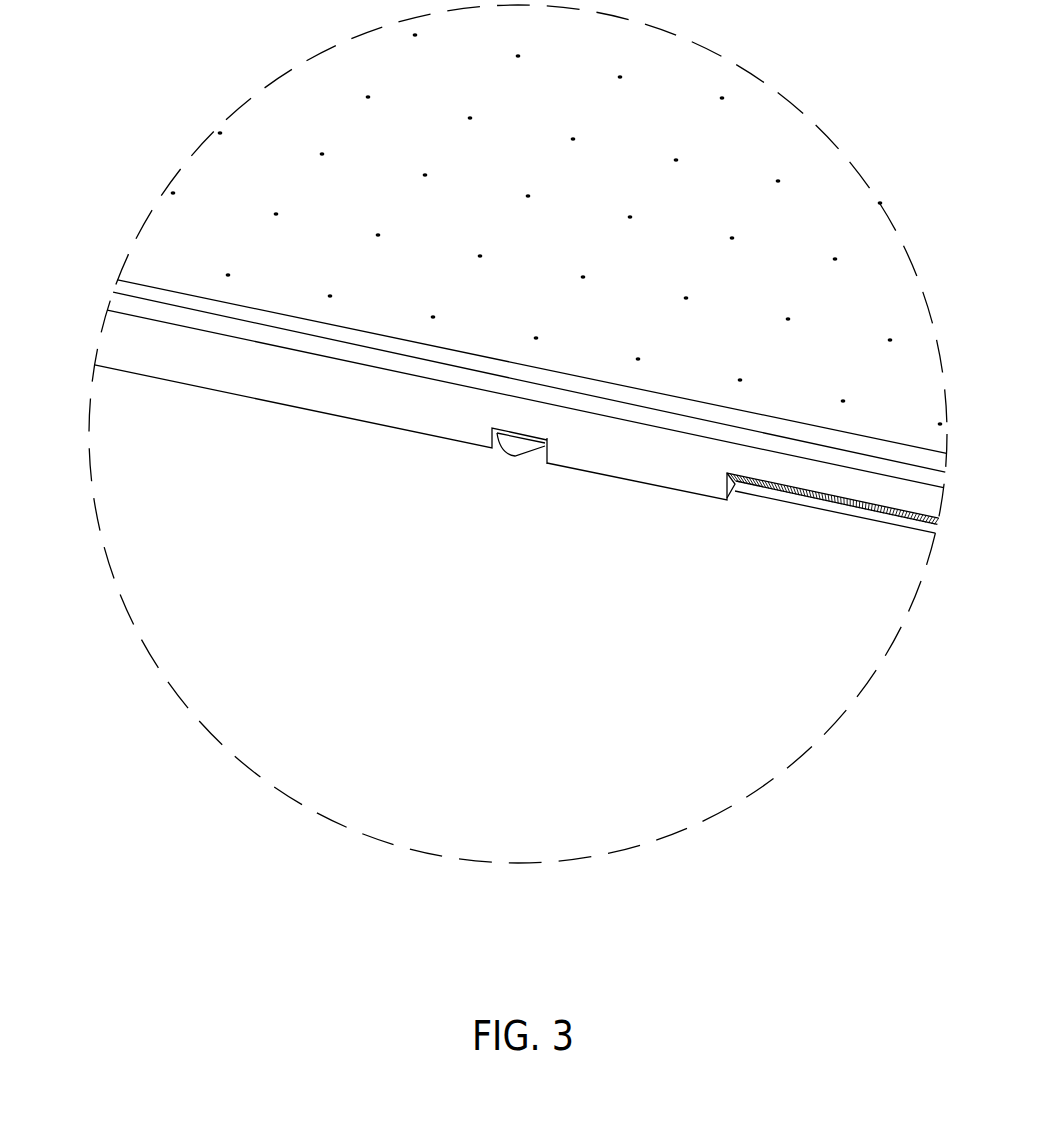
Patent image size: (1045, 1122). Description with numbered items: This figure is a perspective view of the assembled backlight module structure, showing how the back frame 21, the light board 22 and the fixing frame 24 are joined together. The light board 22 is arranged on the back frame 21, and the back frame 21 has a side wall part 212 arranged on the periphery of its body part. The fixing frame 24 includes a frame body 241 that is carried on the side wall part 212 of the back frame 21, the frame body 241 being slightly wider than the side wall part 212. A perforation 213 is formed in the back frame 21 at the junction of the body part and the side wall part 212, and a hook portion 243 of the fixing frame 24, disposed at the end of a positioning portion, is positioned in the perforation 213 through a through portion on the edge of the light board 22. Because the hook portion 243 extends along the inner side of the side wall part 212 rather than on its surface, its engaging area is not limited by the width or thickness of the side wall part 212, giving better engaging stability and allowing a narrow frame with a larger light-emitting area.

The back frame 21 is at (519, 441).
The side wall part 212 is at (243, 382).
The perforation 213 is at (543, 462).
The light board 22 is at (848, 185).
The fixing frame 24 is at (488, 326).
The frame body 241 is at (170, 290).
The hook portion 243 is at (520, 445).